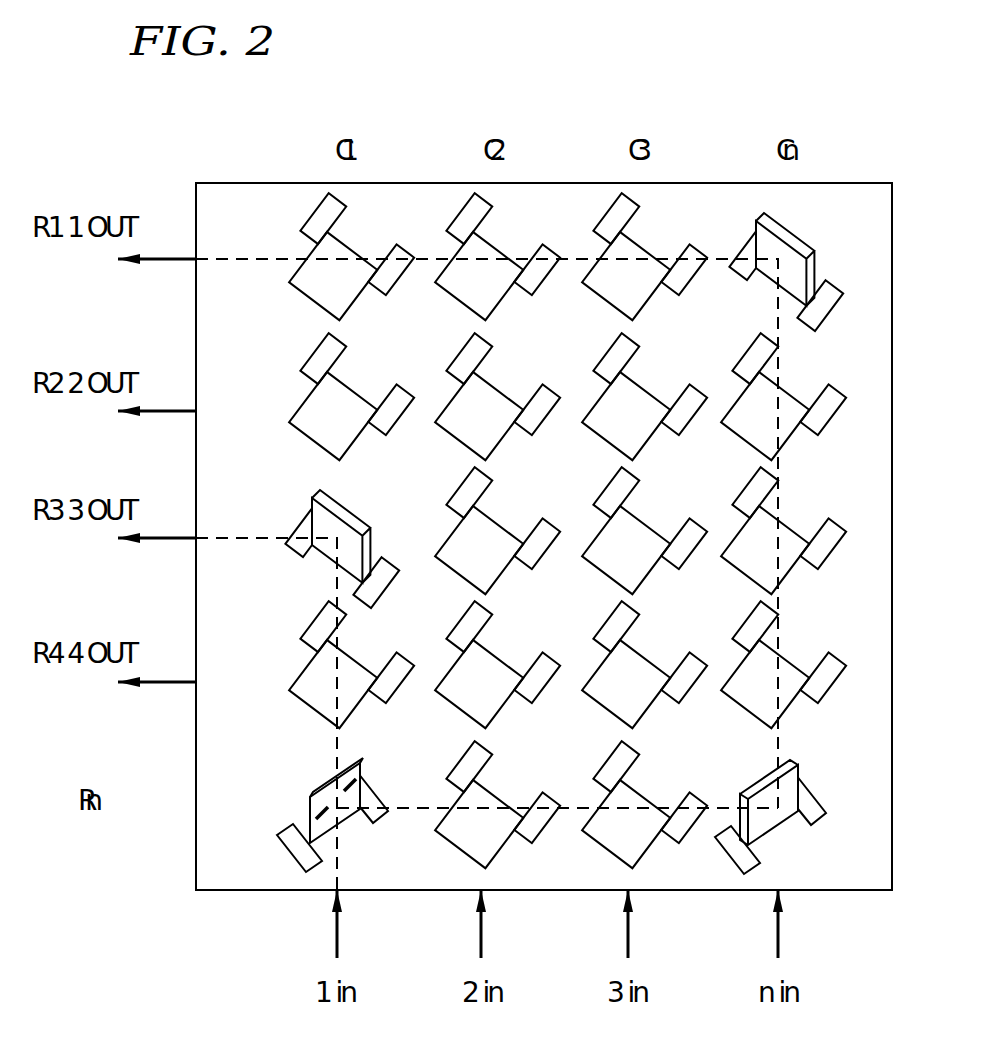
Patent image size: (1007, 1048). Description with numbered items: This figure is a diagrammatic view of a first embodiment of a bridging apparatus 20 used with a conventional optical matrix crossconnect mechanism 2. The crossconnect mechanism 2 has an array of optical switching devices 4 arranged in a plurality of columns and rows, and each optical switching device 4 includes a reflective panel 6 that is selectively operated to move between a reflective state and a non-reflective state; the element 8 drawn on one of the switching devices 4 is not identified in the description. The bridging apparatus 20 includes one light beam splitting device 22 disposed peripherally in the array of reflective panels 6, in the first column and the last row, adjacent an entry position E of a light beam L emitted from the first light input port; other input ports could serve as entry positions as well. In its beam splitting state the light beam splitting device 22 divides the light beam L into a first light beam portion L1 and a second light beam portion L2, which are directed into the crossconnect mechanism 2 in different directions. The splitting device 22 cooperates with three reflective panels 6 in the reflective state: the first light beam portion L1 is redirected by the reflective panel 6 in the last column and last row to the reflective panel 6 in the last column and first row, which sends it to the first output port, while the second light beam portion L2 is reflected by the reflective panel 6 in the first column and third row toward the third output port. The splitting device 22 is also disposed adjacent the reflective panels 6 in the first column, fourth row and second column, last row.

The optical matrix crossconnect mechanism 2 is at (232, 193).
The optical switching device 4 is at (347, 397).
The reflective panel 6 is at (317, 408).
The hinge 8 is at (392, 412).
The bridging apparatus 20 is at (365, 768).
The light beam splitting device 22 is at (318, 800).
The light beam L is at (340, 858).
The first light beam portion L1 is at (492, 807).
The second light beam portion L2 is at (338, 597).
The entry position E is at (333, 891).